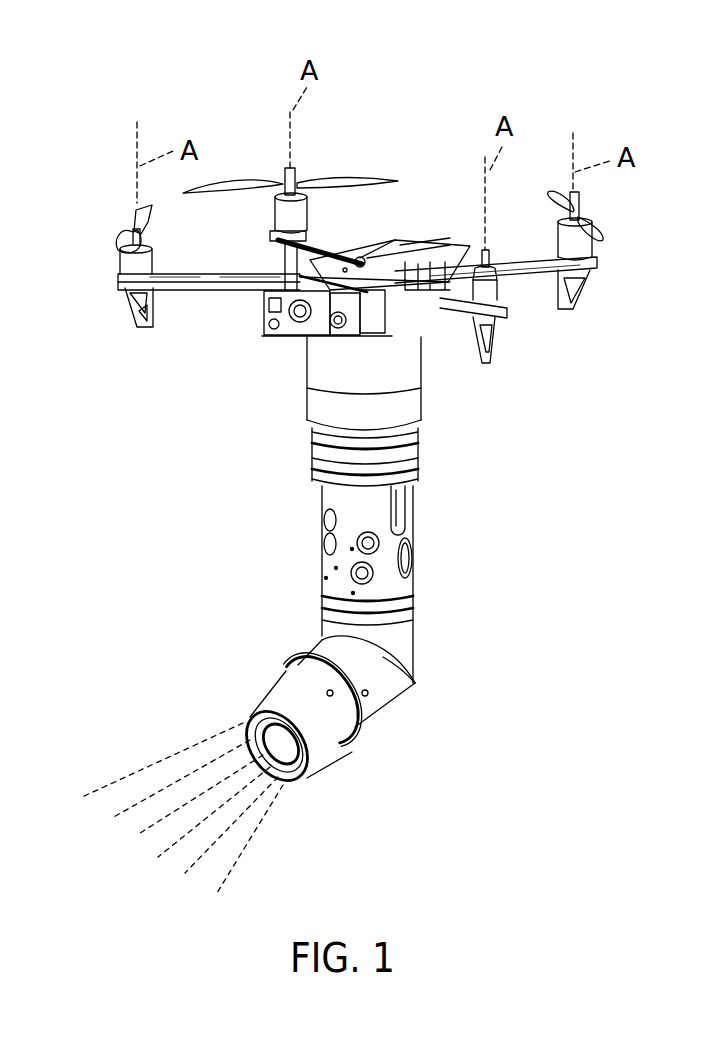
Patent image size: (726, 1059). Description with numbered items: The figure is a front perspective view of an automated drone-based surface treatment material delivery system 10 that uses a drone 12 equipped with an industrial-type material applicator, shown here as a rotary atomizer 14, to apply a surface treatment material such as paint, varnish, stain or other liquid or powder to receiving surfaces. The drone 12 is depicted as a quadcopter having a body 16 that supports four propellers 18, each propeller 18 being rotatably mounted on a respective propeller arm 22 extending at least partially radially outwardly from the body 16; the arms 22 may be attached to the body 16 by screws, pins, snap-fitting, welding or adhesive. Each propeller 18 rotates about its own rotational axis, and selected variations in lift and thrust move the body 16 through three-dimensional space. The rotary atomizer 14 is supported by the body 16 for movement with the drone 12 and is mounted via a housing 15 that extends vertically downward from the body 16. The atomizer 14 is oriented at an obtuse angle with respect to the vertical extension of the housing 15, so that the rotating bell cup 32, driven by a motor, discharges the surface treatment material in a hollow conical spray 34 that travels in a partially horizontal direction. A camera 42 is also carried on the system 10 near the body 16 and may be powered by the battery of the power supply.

The automated drone-based surface treatment material delivery system 10 is at (652, 545).
The drone 12 is at (435, 343).
The rotary atomizer 14 is at (280, 693).
The housing 15 is at (330, 450).
The body 16 is at (413, 240).
The propeller 18 is at (120, 252).
The propeller arm 22 is at (190, 287).
The bell cup 32 is at (305, 758).
The conical spray 34 is at (255, 828).
The camera 42 is at (277, 337).